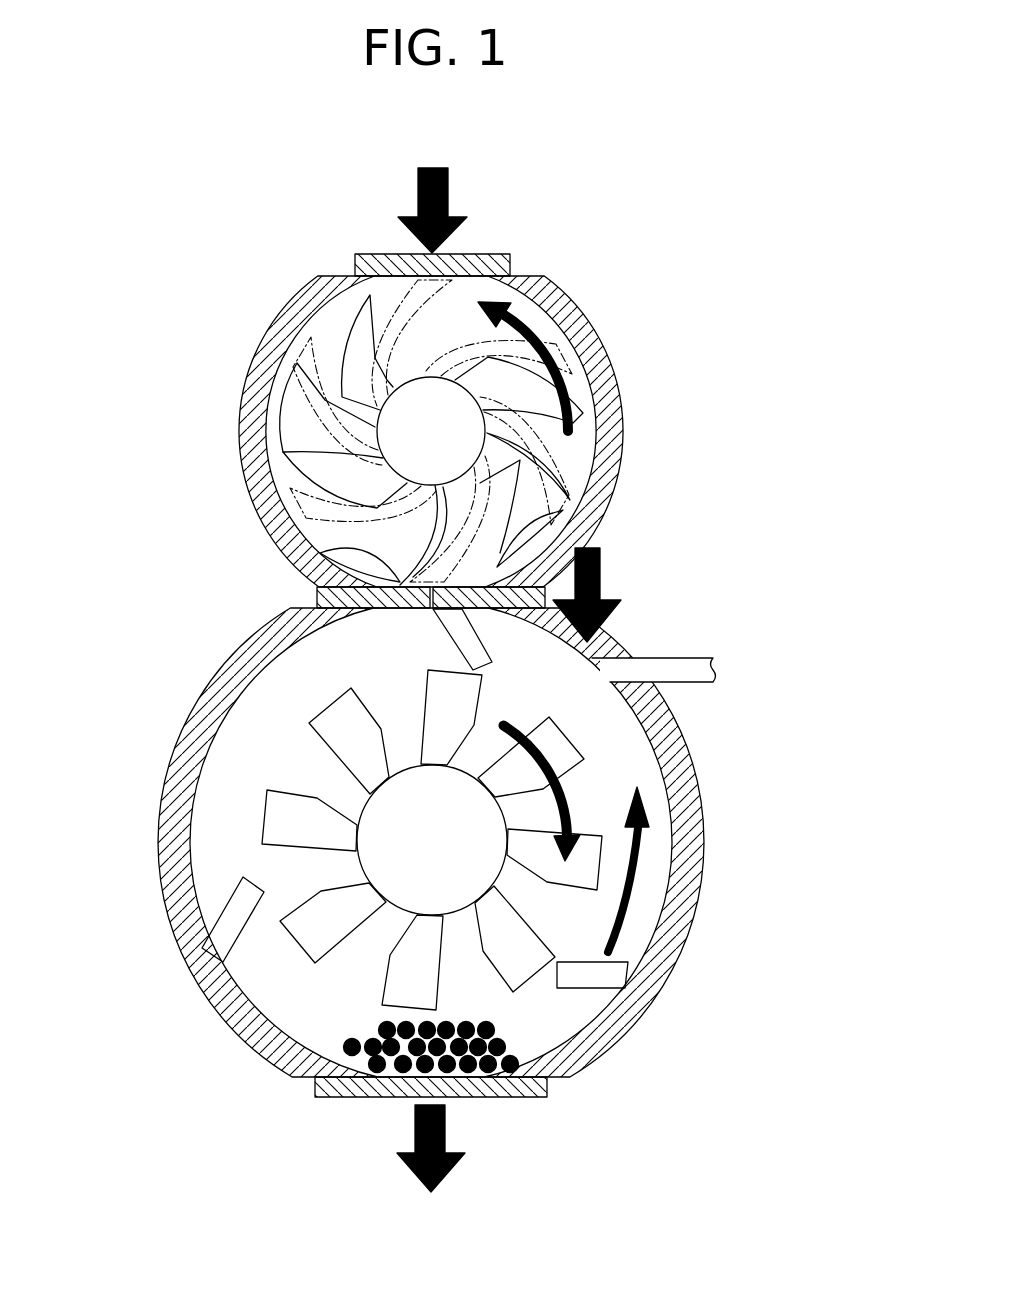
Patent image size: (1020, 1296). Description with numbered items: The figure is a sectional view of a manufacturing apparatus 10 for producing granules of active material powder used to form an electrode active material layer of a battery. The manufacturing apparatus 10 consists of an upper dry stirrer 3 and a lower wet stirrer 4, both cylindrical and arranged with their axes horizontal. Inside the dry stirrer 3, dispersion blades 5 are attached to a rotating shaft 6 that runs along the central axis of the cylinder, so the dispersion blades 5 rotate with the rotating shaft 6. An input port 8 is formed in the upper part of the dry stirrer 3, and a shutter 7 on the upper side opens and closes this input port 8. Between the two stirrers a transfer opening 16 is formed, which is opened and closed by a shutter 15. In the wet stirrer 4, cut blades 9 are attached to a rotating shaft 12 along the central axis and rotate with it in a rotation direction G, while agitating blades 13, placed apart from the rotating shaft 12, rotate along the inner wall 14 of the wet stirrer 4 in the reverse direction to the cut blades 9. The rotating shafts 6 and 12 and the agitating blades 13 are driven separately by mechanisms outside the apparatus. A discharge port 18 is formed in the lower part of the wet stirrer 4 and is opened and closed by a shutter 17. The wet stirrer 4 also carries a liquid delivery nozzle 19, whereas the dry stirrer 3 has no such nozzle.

The manufacturing apparatus 10 is at (643, 256).
The dry stirrer 3 is at (623, 368).
The wet stirrer 4 is at (713, 828).
The dispersion blades 5 is at (297, 412).
The rotating shaft 6 is at (447, 430).
The shutter 7 is at (497, 254).
The input port 8 is at (415, 254).
The cut blades 9 is at (285, 823).
The rotating shaft 12 is at (405, 855).
The agitating blades 13 is at (590, 975).
The inner wall 14 is at (290, 645).
The shutter 15 is at (545, 510).
The transfer opening 16 is at (290, 560).
The shutter 17 is at (492, 1098).
The discharge port 18 is at (412, 1100).
The liquid delivery nozzle 19 is at (666, 669).
The rotation direction G is at (490, 792).